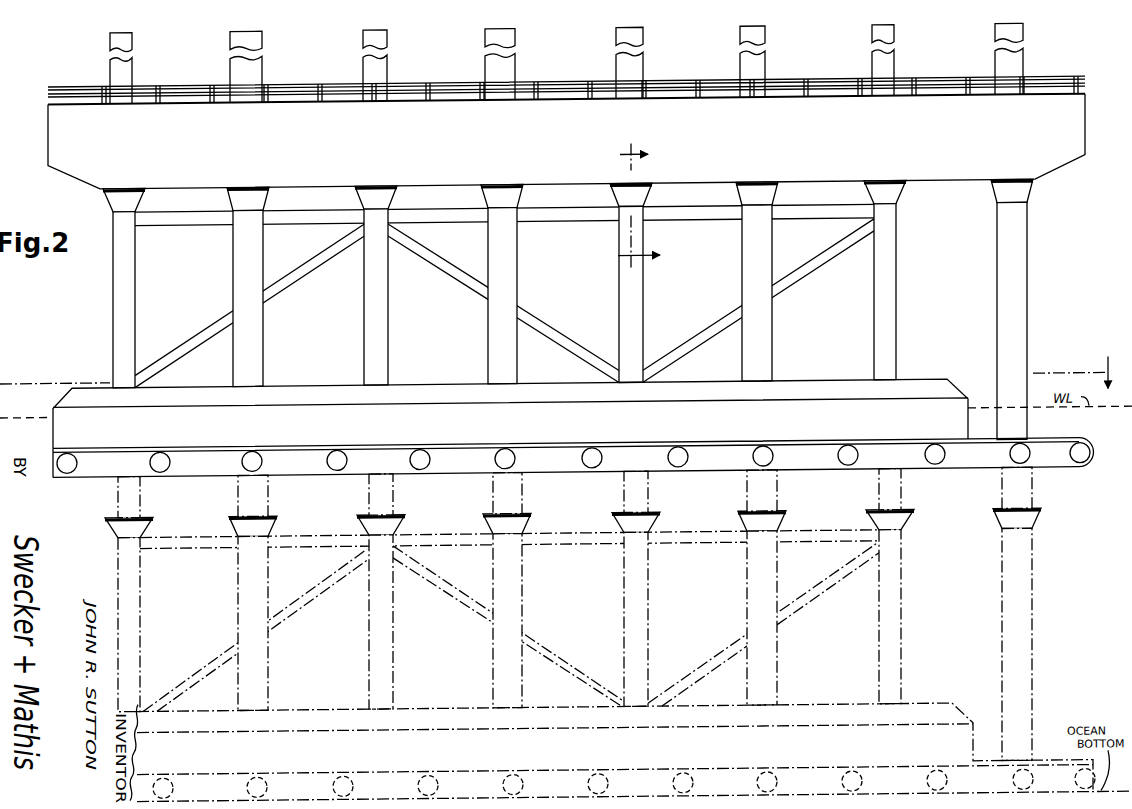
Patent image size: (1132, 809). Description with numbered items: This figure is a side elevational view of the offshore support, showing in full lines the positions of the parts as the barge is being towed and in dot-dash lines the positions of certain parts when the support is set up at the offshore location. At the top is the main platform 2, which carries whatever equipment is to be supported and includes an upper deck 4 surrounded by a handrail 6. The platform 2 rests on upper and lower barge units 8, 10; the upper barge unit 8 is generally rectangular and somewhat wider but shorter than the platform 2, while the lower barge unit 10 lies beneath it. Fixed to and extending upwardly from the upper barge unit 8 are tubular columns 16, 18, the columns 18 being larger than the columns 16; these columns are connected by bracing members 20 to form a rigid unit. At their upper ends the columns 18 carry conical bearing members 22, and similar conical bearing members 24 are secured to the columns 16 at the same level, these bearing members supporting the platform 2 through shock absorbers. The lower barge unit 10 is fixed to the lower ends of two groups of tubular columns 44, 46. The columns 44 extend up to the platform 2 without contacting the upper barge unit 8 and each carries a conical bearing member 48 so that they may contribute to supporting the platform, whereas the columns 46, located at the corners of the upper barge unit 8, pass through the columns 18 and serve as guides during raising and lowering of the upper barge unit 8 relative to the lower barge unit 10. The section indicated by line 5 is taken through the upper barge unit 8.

The main platform 2 is at (1092, 133).
The upper deck 4 is at (1075, 104).
The section line 5 is at (560, 377).
The handrail 6 is at (1075, 89).
The upper barge unit 8 is at (971, 718).
The lower barge unit 10 is at (1090, 480).
The tubular columns 16 is at (388, 62).
The tubular columns 18 is at (643, 58).
The bracing members 20 is at (219, 229).
The conical bearing members 22 is at (108, 205).
The conical bearing members 24 is at (359, 213).
The tubular columns 44 is at (262, 58).
The tubular columns 46 is at (132, 60).
The conical bearing member 48 is at (229, 213).